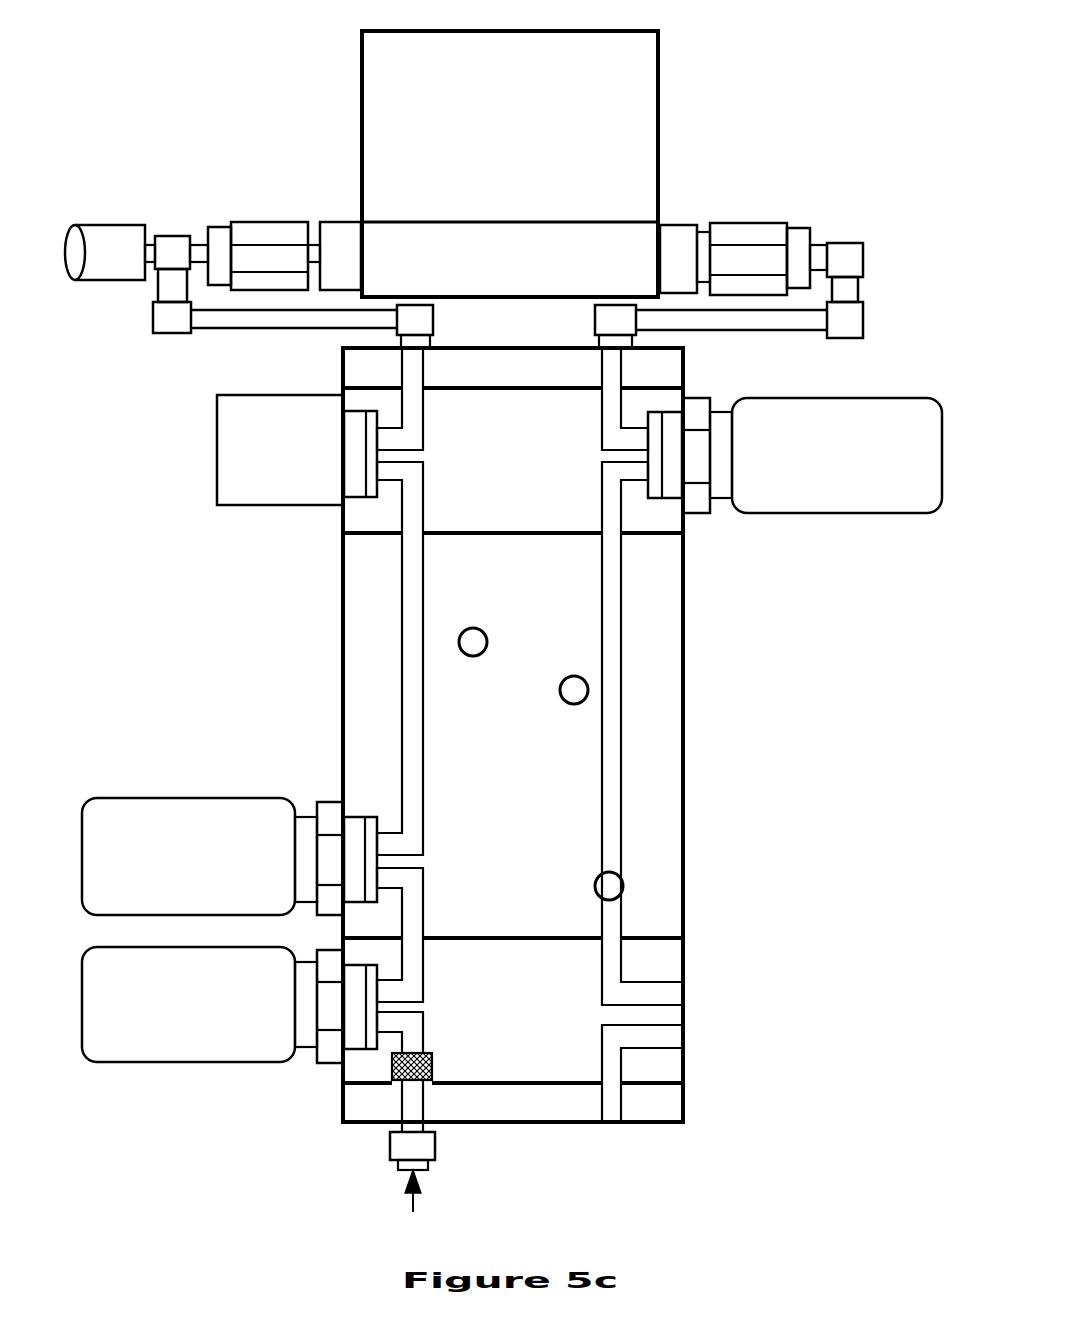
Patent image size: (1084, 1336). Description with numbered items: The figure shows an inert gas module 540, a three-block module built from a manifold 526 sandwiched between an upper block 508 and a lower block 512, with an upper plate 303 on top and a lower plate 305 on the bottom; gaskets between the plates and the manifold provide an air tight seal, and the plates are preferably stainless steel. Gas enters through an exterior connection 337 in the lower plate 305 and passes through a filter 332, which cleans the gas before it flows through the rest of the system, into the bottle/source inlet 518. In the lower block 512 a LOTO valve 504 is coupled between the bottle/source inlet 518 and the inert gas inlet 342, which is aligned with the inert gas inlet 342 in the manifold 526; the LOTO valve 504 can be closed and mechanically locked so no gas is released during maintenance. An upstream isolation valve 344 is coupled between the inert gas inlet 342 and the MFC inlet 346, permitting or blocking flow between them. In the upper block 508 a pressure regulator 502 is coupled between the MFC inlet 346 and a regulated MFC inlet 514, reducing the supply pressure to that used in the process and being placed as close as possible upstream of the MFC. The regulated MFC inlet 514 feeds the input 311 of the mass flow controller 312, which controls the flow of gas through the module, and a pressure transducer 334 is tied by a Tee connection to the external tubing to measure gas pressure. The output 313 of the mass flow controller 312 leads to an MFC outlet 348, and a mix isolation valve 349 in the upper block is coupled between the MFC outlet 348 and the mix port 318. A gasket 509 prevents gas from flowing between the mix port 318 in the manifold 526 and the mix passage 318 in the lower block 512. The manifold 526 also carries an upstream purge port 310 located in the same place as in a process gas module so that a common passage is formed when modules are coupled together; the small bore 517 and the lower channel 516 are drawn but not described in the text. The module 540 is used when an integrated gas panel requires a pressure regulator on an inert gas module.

The inert gas module 540 is at (203, 60).
The mass flow controller 312 is at (510, 164).
The MFC input 311 is at (333, 248).
The MFC output 313 is at (685, 248).
The pressure transducer 334 is at (115, 245).
The upper plate 303 is at (363, 365).
The upper block 508 is at (362, 518).
The gasket 509 is at (687, 938).
The lower block 512 is at (352, 1062).
The lower plate 305 is at (352, 1100).
The manifold 526 is at (367, 682).
The MFC inlet 346 is at (416, 490).
The inert gas inlet 342 is at (413, 890).
The bottle/source inlet 518 is at (410, 1023).
The regulated MFC inlet 514 is at (416, 422).
The MFC outlet 348 is at (612, 432).
The mix port 318 is at (610, 502).
The outlet channel 516 is at (608, 1057).
The upstream purge port 310 is at (480, 634).
The bore 517 is at (573, 693).
The filter 332 is at (434, 1066).
The exterior connection 337 is at (400, 1140).
The pressure regulator 502 is at (280, 450).
The upstream isolation valve 344 is at (212, 856).
The LOTO valve 504 is at (212, 1005).
The mix isolation valve 349 is at (812, 455).